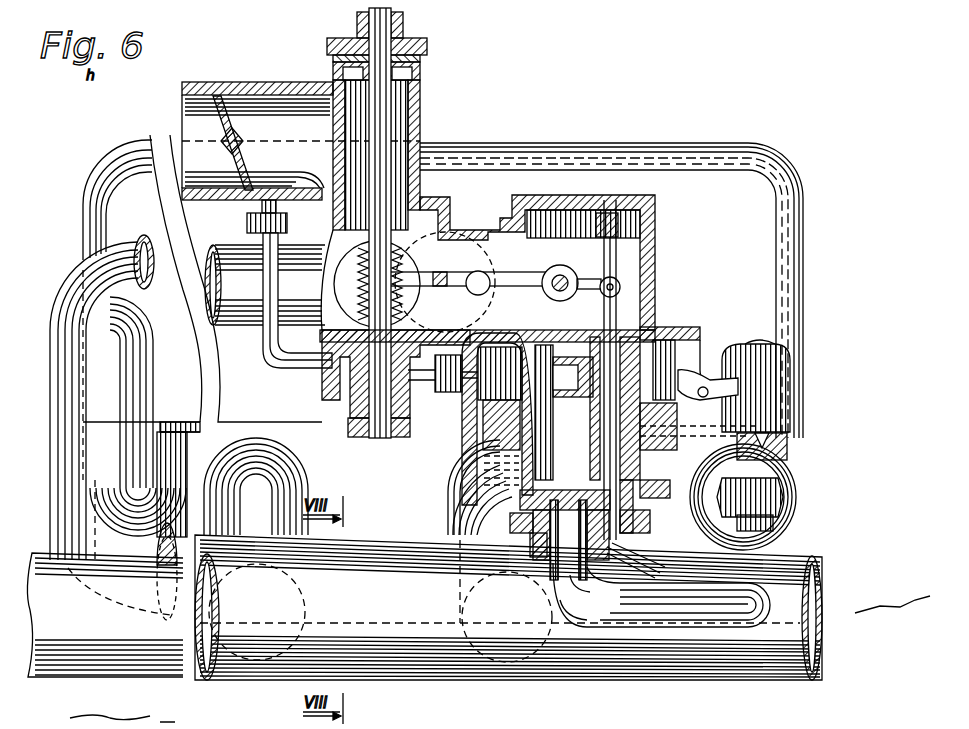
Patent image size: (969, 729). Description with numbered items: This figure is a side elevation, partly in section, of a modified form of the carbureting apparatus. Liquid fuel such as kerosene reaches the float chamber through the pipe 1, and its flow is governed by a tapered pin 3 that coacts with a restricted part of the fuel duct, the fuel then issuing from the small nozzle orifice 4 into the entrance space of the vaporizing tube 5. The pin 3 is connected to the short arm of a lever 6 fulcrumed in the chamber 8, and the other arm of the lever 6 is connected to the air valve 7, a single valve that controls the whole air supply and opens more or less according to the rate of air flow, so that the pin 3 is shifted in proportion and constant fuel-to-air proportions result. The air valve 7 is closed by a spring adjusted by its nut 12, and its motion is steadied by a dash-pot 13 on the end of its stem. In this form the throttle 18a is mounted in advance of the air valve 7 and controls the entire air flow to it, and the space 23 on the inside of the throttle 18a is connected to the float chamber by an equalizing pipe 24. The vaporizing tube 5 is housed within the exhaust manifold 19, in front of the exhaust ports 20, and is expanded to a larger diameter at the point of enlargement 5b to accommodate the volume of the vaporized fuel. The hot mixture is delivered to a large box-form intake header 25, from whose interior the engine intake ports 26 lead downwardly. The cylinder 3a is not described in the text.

The pipe 1 is at (785, 515).
The pin 3 is at (605, 432).
The cylinder of valve body 3a is at (514, 419).
The nozzle orifice 4 is at (572, 397).
The vaporizing tube 5 is at (70, 292).
The point of enlargement 5b is at (652, 567).
The lever 6 is at (503, 283).
The air valve 7 is at (420, 237).
The chamber 8 is at (537, 252).
The nut 12 is at (383, 440).
The dash-pot 13 is at (398, 45).
The throttle 18a is at (182, 104).
The exhaust manifold 19 is at (268, 452).
The exhaust ports 20 is at (460, 608).
The space 23 is at (301, 141).
The equalizing pipe 24 is at (270, 358).
The intake header 25 is at (636, 146).
The intake ports 26 is at (181, 454).